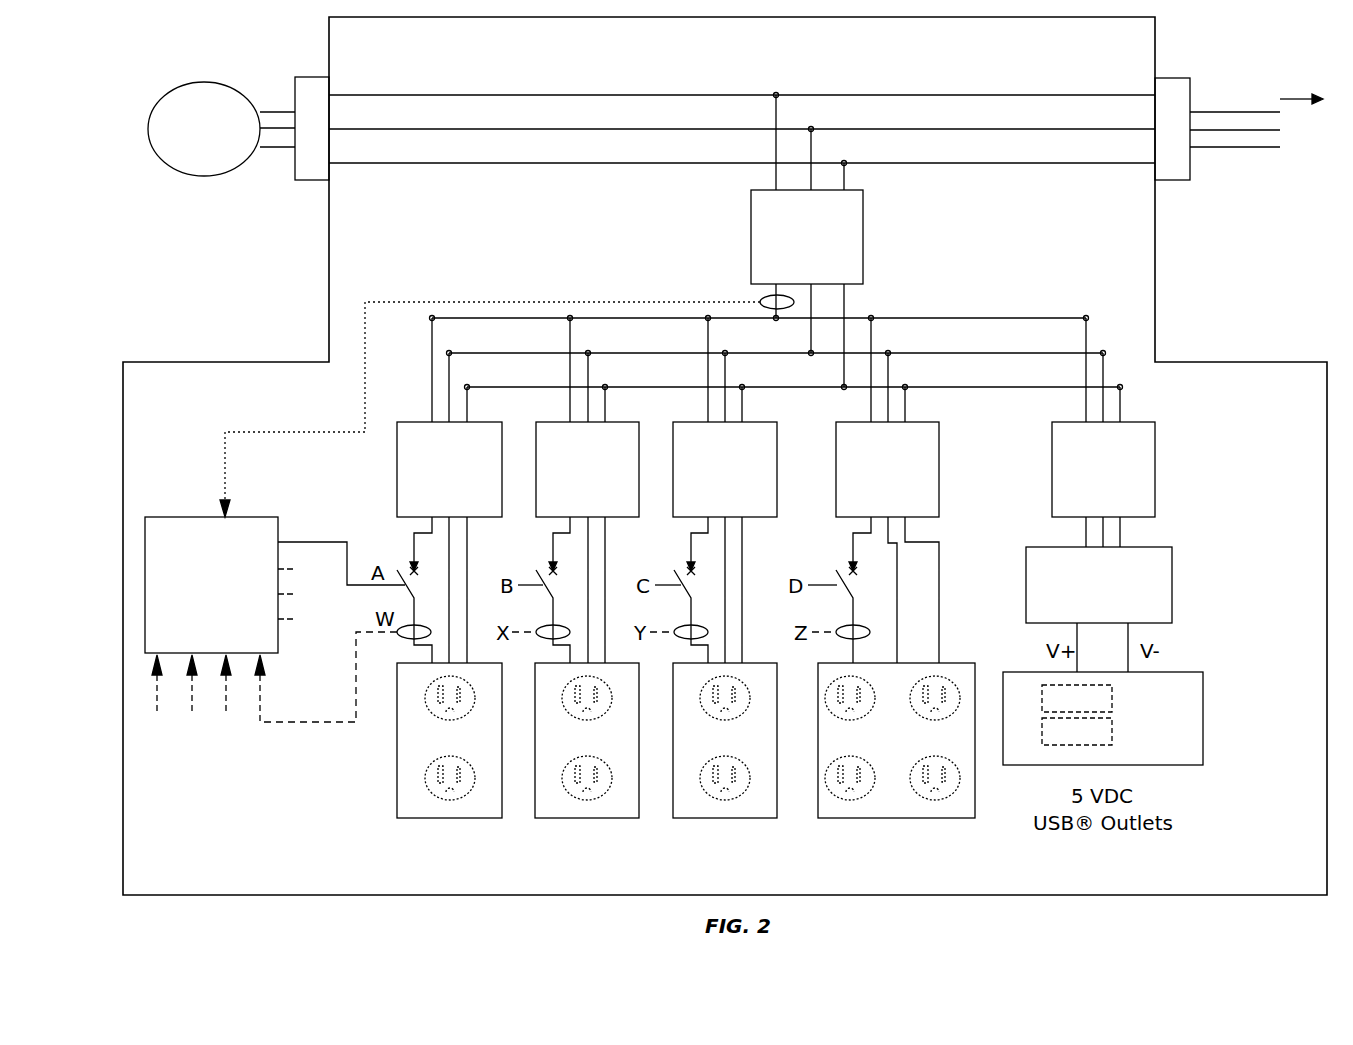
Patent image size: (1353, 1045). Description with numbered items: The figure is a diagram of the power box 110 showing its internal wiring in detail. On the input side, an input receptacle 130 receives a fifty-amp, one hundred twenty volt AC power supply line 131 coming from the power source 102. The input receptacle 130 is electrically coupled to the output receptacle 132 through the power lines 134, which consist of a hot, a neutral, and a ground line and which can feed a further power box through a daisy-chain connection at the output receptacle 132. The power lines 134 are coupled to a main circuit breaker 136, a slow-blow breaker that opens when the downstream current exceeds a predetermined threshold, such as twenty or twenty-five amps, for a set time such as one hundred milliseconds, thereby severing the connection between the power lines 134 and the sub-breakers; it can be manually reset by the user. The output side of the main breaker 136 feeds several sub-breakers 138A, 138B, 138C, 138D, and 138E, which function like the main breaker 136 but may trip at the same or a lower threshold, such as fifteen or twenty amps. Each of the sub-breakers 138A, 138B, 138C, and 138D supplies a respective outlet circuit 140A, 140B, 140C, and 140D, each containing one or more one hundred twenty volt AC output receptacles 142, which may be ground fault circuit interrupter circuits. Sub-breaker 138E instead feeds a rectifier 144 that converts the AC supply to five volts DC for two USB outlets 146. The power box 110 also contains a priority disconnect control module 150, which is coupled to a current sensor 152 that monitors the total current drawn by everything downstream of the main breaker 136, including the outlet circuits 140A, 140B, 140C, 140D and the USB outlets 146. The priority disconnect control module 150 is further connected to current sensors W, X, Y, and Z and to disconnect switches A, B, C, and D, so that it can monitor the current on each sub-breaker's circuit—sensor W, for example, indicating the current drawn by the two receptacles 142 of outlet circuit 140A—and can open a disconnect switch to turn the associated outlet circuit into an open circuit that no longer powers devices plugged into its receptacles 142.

The power source 102 is at (204, 129).
The power box 110 is at (1182, 360).
The input receptacle 130 is at (312, 183).
The power supply line 131 is at (277, 80).
The output receptacle 132 is at (1180, 183).
The power lines 134 is at (598, 79).
The main circuit breaker 136 is at (865, 258).
The sub-breaker 138A is at (425, 493).
The sub-breaker 138B is at (563, 493).
The sub-breaker 138C is at (701, 493).
The sub-breaker 138D is at (863, 493).
The sub-breaker 138E is at (1079, 493).
The outlet circuit 140A is at (426, 750).
The outlet circuit 140B is at (563, 750).
The outlet circuit 140C is at (701, 750).
The outlet circuit 140D is at (870, 750).
The output receptacle 142 is at (432, 773).
The rectifier 144 is at (1173, 577).
The USB outlets 146 is at (1112, 687).
The priority disconnect control module 150 is at (168, 515).
The current sensor 152 is at (760, 302).